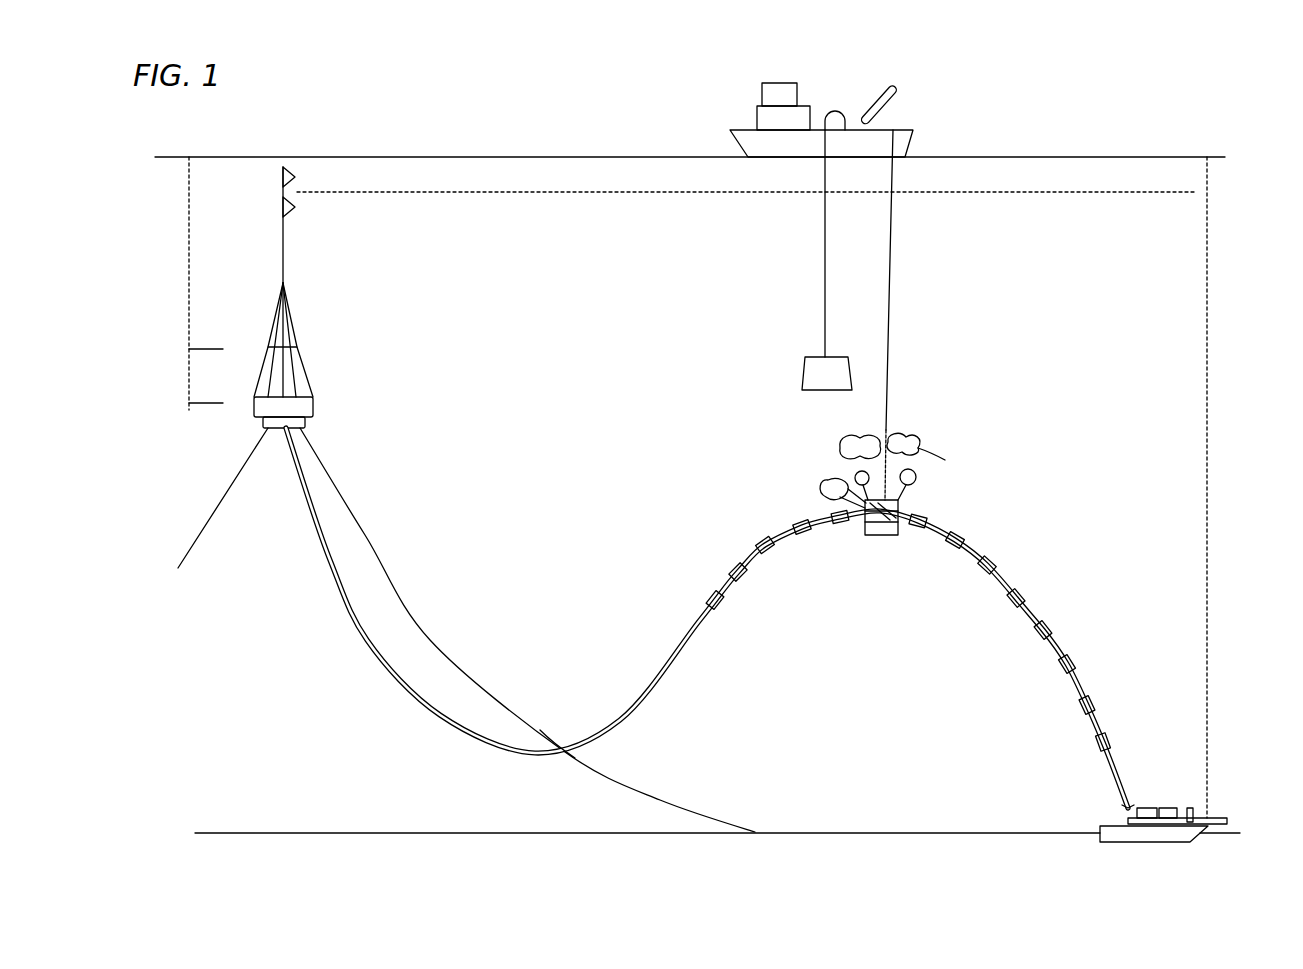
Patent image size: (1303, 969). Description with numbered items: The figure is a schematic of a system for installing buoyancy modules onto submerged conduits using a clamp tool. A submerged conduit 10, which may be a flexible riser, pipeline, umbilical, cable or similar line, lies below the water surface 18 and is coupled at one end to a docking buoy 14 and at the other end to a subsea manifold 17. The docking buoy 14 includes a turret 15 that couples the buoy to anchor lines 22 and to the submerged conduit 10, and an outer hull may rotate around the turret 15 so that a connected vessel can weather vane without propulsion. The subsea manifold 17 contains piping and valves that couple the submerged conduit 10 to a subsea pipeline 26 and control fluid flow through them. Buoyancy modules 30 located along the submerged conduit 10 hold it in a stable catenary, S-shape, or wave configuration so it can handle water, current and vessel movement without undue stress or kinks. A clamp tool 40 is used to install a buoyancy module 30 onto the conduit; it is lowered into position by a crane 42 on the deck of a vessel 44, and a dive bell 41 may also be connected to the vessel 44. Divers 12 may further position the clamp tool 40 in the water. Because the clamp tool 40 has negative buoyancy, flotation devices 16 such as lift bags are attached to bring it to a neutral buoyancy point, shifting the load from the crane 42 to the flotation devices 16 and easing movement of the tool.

The submerged conduit 10 is at (658, 685).
The divers 12 is at (823, 490).
The docking buoy 14 is at (306, 372).
The turret 15 is at (306, 423).
The flotation device 16 is at (827, 478).
The subsea manifold 17 is at (1148, 808).
The water surface 18 is at (430, 157).
The anchor lines 22 is at (216, 514).
The subsea pipeline 26 is at (1225, 818).
The buoyancy module 30 is at (893, 537).
The clamp tool 40 is at (865, 532).
The dive bell 41 is at (803, 372).
The crane 42 is at (878, 95).
The vessel 44 is at (740, 135).